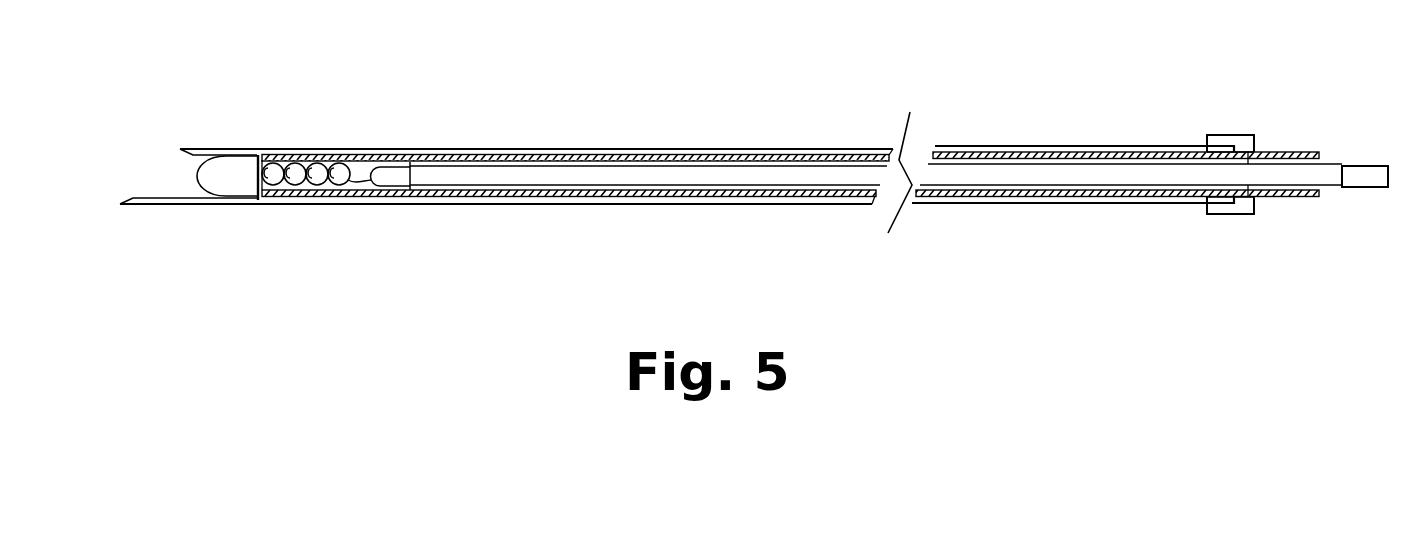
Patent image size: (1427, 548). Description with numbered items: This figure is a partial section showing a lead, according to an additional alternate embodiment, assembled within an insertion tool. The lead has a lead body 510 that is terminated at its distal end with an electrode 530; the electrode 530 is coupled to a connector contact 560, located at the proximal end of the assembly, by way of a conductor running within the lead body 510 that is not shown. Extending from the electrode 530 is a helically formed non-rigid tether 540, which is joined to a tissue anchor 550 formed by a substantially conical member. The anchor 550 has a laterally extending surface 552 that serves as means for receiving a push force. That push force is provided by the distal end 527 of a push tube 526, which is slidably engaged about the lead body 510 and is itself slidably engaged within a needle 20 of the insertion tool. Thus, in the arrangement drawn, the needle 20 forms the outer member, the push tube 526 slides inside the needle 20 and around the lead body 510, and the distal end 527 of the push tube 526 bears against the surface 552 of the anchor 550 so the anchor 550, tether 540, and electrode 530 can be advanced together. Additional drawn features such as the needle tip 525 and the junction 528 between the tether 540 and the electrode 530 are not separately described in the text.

The needle 20 is at (725, 145).
The lead body 510 is at (560, 180).
The lower blade 525 is at (192, 196).
The push tube 526 is at (555, 154).
The distal end 527 is at (257, 200).
The connecting wire 528 is at (356, 165).
The electrode 530 is at (385, 181).
The non-rigid tether 540 is at (320, 165).
The tissue anchor 550 is at (213, 168).
The laterally extending surface 552 is at (292, 161).
The connector contact 560 is at (1378, 180).